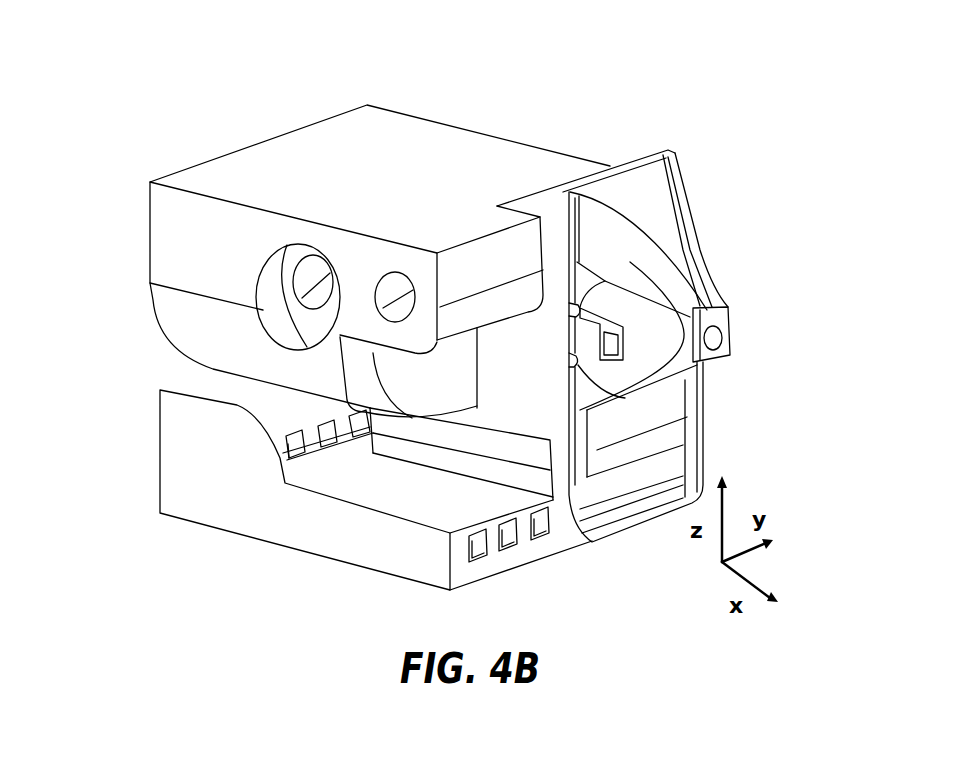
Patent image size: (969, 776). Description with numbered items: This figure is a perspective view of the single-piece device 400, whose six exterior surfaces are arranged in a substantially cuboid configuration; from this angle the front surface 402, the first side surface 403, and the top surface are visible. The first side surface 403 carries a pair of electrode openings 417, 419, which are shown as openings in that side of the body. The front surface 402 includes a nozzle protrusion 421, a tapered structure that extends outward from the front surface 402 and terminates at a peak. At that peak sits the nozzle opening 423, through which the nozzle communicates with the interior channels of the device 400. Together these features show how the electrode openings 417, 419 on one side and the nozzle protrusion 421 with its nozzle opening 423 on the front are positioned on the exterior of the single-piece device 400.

The single-piece device 400 is at (138, 102).
The front surface 402 is at (680, 455).
The first side surface 403 is at (165, 242).
The electrode opening 417 is at (270, 320).
The electrode opening 419 is at (383, 307).
The nozzle protrusion 421 is at (683, 258).
The nozzle opening 423 is at (718, 334).